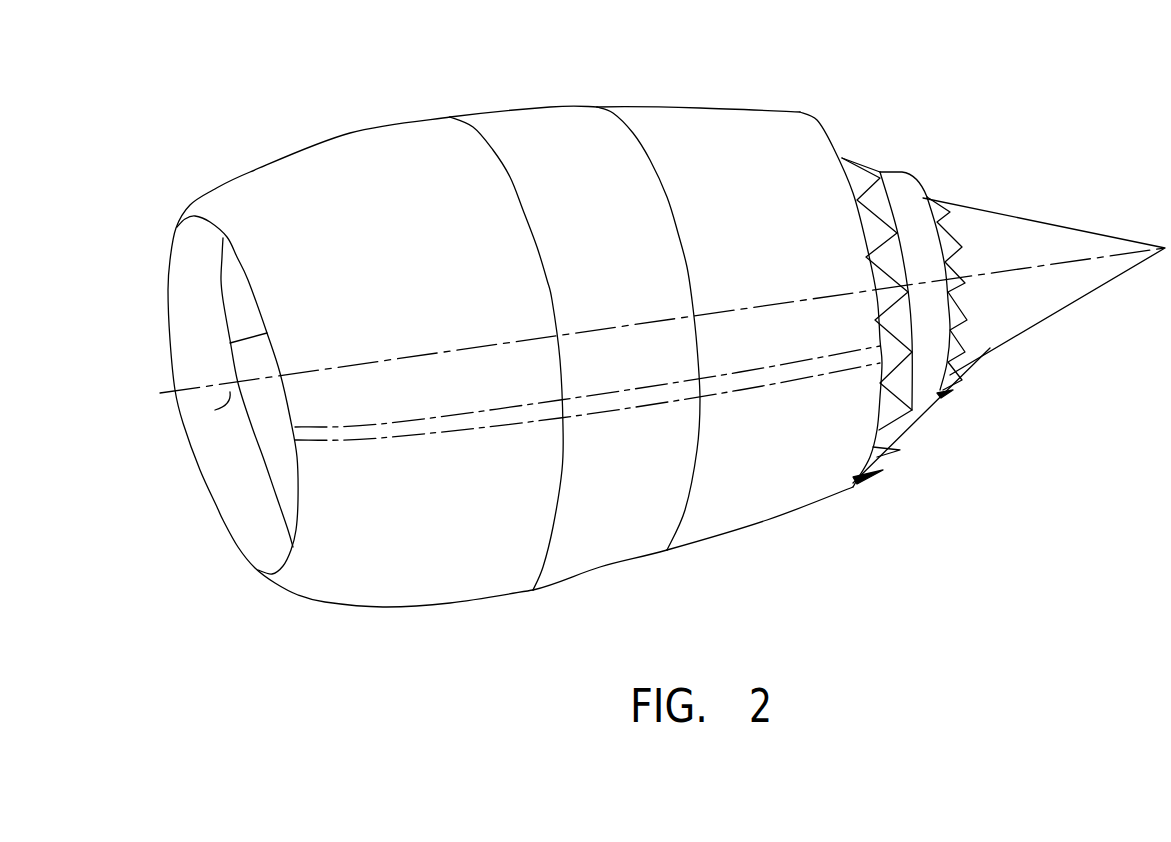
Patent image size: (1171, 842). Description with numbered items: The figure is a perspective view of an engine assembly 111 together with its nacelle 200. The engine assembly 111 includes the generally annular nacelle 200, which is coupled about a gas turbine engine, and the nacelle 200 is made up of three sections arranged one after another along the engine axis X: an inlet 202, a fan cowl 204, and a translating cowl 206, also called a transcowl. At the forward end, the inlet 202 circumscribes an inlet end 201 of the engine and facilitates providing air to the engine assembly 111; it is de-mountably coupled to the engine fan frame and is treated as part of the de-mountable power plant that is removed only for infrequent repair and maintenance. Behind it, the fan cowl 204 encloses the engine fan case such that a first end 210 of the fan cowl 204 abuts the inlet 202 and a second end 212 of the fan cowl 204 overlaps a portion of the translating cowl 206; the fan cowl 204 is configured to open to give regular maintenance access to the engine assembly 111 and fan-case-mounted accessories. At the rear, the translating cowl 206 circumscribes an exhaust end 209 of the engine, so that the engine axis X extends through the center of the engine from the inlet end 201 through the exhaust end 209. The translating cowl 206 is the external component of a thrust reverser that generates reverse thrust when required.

The nacelle 200 is at (662, 336).
The engine assembly 111 is at (525, 355).
The inlet end 201 is at (273, 532).
The inlet 202 is at (350, 357).
The fan cowl 204 is at (542, 364).
The translating cowl 206 is at (730, 333).
The exhaust end 209 is at (932, 164).
The first end 210 is at (533, 590).
The second end 212 is at (667, 550).